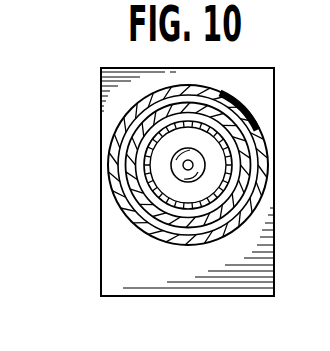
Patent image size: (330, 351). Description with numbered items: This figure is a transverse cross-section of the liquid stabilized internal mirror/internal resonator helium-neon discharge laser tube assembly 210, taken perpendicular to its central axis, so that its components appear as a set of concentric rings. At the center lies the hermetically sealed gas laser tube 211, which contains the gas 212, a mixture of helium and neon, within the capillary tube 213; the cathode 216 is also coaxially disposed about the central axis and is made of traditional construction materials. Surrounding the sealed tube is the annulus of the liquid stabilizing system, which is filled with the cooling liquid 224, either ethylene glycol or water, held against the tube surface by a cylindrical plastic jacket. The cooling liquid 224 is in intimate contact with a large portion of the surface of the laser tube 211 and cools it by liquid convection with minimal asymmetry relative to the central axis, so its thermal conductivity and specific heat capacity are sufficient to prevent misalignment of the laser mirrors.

The liquid stabilized internal mirror/internal resonator helium-neon discharge laser 210 is at (263, 64).
The hermetically sealed gas laser tube 211 is at (153, 193).
The gas 212 is at (188, 172).
The capillary tube 213 is at (204, 158).
The cathode 216 is at (155, 150).
The cooling liquid 224 is at (155, 226).